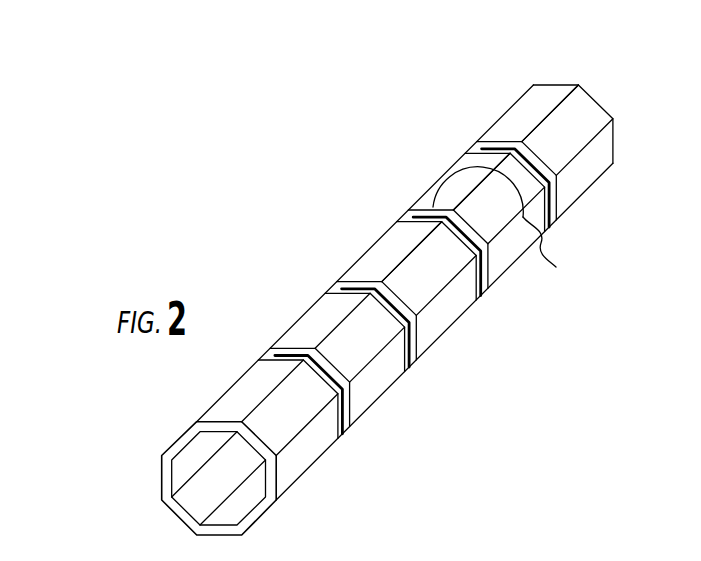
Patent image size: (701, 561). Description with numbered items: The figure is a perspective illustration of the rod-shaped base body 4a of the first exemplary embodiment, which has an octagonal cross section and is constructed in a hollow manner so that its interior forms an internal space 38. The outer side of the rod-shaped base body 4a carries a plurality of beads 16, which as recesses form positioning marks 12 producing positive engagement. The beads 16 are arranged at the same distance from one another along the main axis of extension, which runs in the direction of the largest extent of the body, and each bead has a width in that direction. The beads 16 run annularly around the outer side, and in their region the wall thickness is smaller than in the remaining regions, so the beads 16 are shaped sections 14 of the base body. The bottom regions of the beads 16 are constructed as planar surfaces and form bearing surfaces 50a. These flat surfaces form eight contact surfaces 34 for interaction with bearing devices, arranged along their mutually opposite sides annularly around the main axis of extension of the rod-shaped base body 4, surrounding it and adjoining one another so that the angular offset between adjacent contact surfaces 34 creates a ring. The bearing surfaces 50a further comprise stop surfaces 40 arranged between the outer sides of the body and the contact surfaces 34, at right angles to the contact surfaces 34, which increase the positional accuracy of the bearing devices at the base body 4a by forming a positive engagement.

The rod-shaped base body 4 is at (613, 93).
The rod-shaped base body 4a is at (613, 143).
The positioning marks 12 is at (486, 122).
The shaped sections 14 is at (398, 206).
The beads 16 is at (550, 232).
The contact surfaces 34 is at (482, 273).
The internal space 38 is at (195, 497).
The stop surfaces 40 is at (337, 281).
The bearing surfaces 50a is at (555, 249).